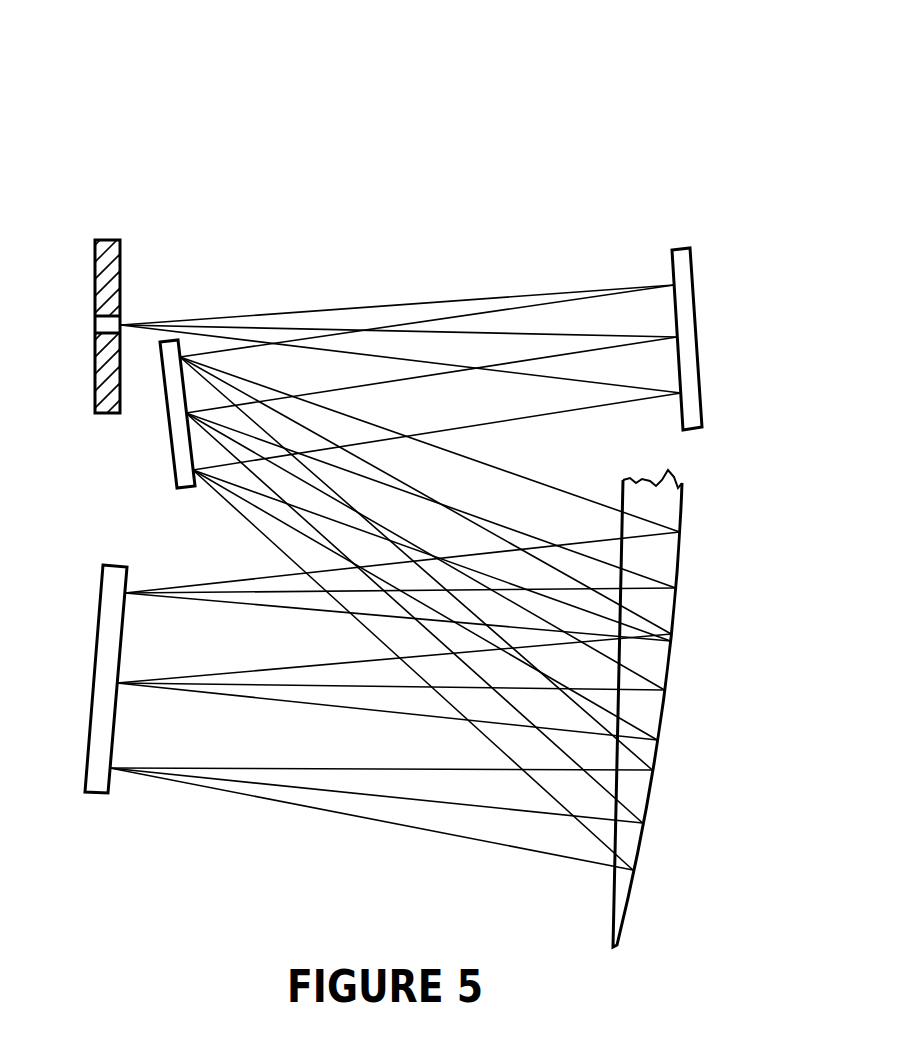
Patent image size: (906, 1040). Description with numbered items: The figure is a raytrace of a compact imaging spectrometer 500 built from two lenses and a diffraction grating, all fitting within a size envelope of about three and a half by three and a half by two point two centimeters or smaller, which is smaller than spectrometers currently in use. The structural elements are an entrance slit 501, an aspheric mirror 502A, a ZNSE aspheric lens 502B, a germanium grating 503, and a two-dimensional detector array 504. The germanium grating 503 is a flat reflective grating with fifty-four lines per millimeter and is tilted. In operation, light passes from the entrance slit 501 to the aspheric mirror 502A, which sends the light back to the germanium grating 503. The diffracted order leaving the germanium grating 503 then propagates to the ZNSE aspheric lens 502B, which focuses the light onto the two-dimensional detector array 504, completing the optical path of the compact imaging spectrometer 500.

The compact imaging spectrometer 500 is at (222, 146).
The entrance slit 501 is at (113, 239).
The aspheric mirror 502A is at (694, 305).
The ZNSE aspheric lens 502B is at (646, 803).
The germanium grating 503 is at (173, 454).
The 2D detector array 504 is at (93, 793).